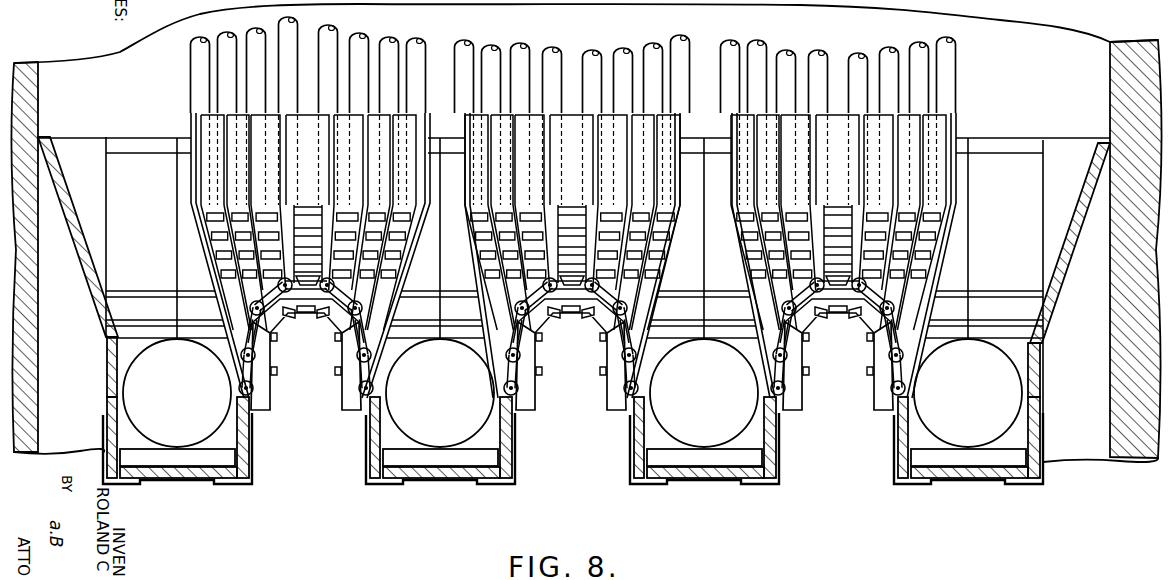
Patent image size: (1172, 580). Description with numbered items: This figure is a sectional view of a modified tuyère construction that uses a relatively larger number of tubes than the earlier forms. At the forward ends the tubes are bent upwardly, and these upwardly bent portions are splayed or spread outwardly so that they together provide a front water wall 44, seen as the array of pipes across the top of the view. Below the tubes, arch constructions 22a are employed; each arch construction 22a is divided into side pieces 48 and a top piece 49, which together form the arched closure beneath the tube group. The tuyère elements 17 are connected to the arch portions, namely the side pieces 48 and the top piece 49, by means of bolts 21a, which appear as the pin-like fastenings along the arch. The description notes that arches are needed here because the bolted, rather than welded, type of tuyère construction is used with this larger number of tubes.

The front water wall 44 is at (560, 35).
The tuyère elements 17 is at (298, 317).
The top piece 49 is at (570, 292).
The arch construction 22a is at (590, 396).
The side pieces 48 is at (574, 360).
The bolts 21a is at (538, 365).